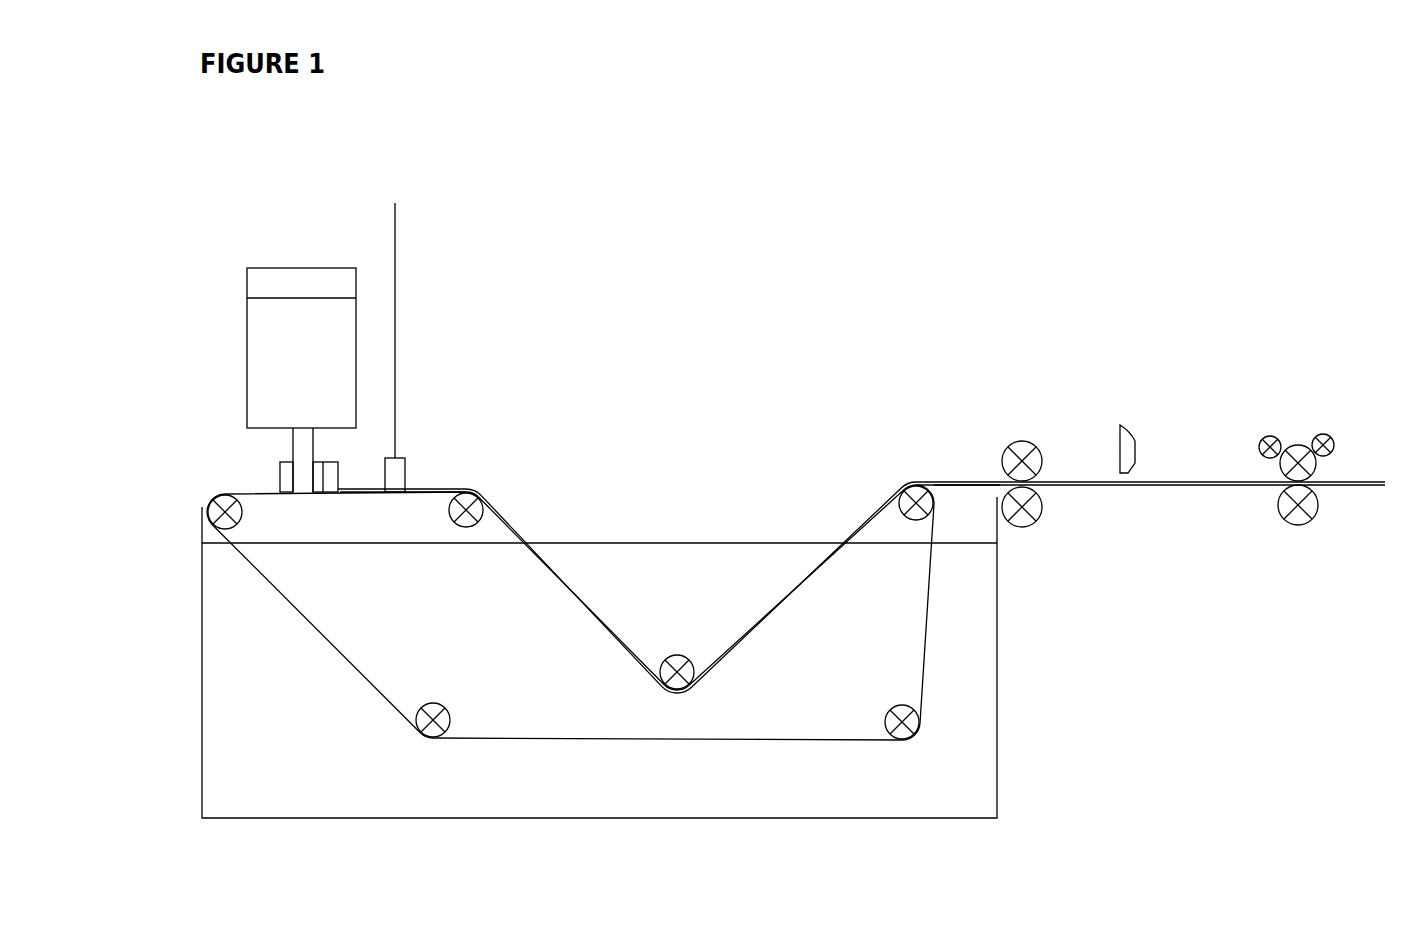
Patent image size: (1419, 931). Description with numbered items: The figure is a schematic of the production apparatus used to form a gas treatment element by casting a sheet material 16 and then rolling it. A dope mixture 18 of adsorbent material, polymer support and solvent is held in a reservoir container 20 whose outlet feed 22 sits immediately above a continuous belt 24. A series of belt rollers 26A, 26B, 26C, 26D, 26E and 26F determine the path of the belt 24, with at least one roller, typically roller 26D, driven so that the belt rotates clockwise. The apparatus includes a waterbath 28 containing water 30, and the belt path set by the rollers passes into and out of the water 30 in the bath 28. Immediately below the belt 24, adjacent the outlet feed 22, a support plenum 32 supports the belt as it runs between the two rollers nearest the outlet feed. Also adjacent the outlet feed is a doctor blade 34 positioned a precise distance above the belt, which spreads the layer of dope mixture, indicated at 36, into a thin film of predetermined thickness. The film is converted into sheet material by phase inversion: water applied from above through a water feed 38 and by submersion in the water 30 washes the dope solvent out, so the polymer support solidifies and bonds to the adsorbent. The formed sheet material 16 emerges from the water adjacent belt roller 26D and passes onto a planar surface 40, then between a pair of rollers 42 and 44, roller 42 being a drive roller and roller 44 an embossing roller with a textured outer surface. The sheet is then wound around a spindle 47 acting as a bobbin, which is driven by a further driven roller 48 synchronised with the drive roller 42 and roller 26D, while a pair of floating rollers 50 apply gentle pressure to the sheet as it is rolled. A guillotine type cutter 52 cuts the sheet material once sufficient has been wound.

The sheet material 16 is at (878, 508).
The dope mixture 18 is at (283, 338).
The reservoir container 20 is at (287, 283).
The outlet feed 22 is at (297, 487).
The continuous belt 24 is at (290, 605).
The belt roller 26A is at (210, 520).
The belt roller 26B is at (473, 508).
The belt roller 26C is at (677, 682).
The belt roller 26D is at (908, 488).
The belt roller 26E is at (912, 723).
The belt roller 26F is at (420, 727).
The waterbath 28 is at (1000, 688).
The water 30 is at (253, 700).
The support plenum 32 is at (437, 495).
The doctor blade 34 is at (332, 477).
The layer of dope mixture 36 is at (355, 487).
The water feed 38 is at (395, 487).
The planar surface 40 is at (945, 485).
The drive roller 42 is at (1028, 507).
The embossing roller 44 is at (1018, 448).
The spindle 47 is at (1298, 455).
The driven roller 48 is at (1298, 518).
The floating rollers 50 is at (1263, 440).
The guillotine type cutter 52 is at (1117, 437).